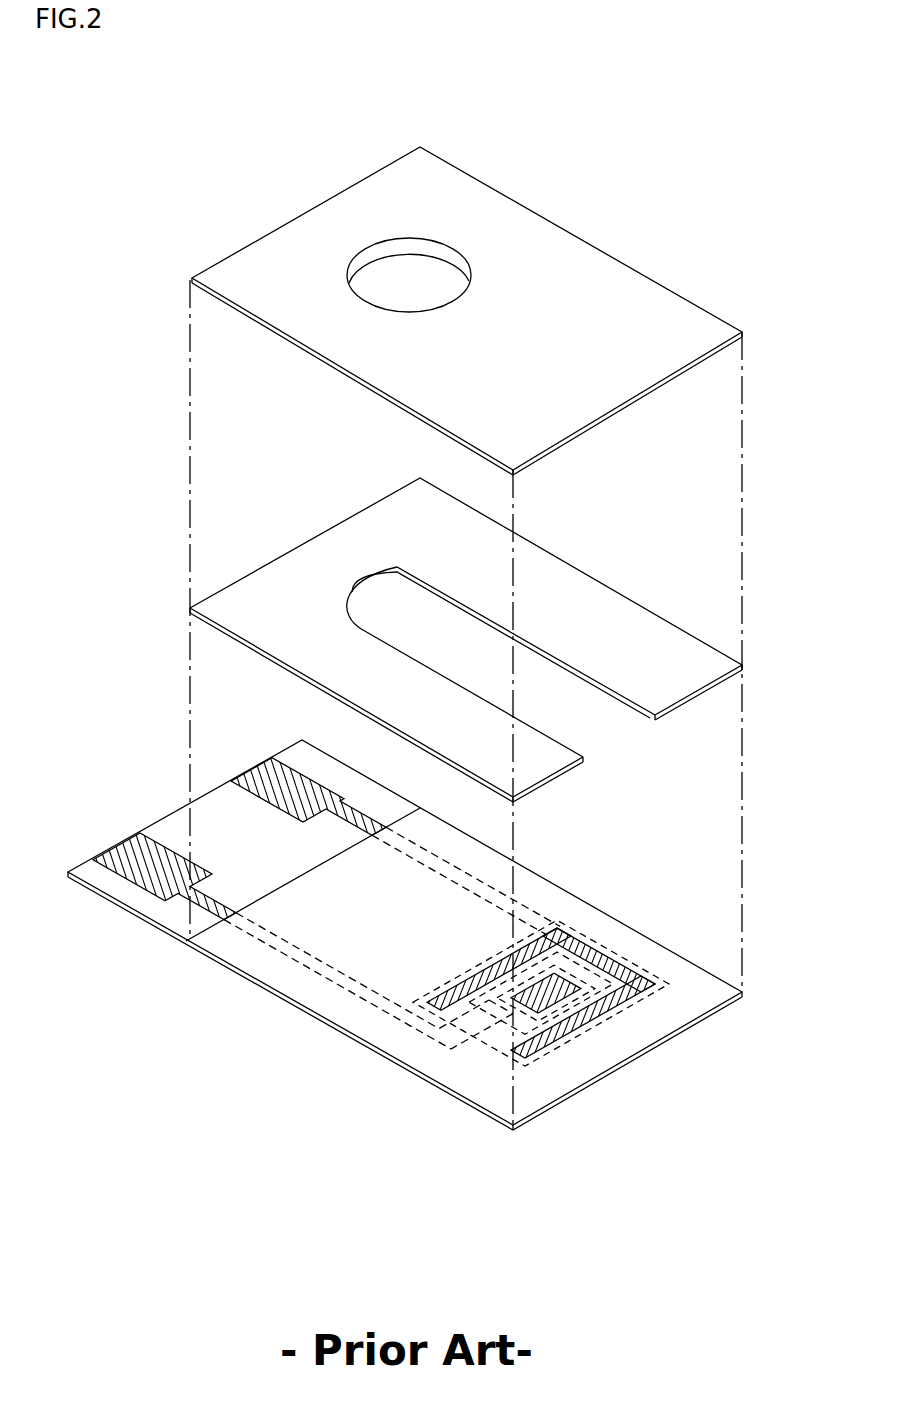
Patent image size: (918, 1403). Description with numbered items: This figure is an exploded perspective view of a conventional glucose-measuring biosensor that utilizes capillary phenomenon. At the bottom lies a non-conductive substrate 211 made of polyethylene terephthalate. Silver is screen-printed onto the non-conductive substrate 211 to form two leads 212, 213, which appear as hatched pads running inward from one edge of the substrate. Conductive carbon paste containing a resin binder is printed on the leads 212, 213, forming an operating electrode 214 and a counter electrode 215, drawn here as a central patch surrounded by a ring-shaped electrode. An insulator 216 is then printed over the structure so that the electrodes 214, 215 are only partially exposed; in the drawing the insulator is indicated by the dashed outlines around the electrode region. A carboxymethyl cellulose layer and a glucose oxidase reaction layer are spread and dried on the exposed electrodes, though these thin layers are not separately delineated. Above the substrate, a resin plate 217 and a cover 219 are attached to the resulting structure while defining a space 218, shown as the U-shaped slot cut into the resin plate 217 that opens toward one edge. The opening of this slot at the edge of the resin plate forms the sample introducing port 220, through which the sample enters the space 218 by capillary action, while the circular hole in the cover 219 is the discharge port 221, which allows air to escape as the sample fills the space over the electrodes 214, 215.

The non-conductive substrate 211 is at (148, 918).
The lead 212 is at (128, 858).
The lead 213 is at (267, 776).
The operating electrode 214 is at (543, 942).
The counter electrode 215 is at (548, 945).
The insulator 216 is at (427, 888).
The resin plate 217 is at (265, 582).
The space 218 is at (530, 657).
The cover 219 is at (318, 225).
The sample introducing port 220 is at (608, 722).
The discharge port 221 is at (435, 268).